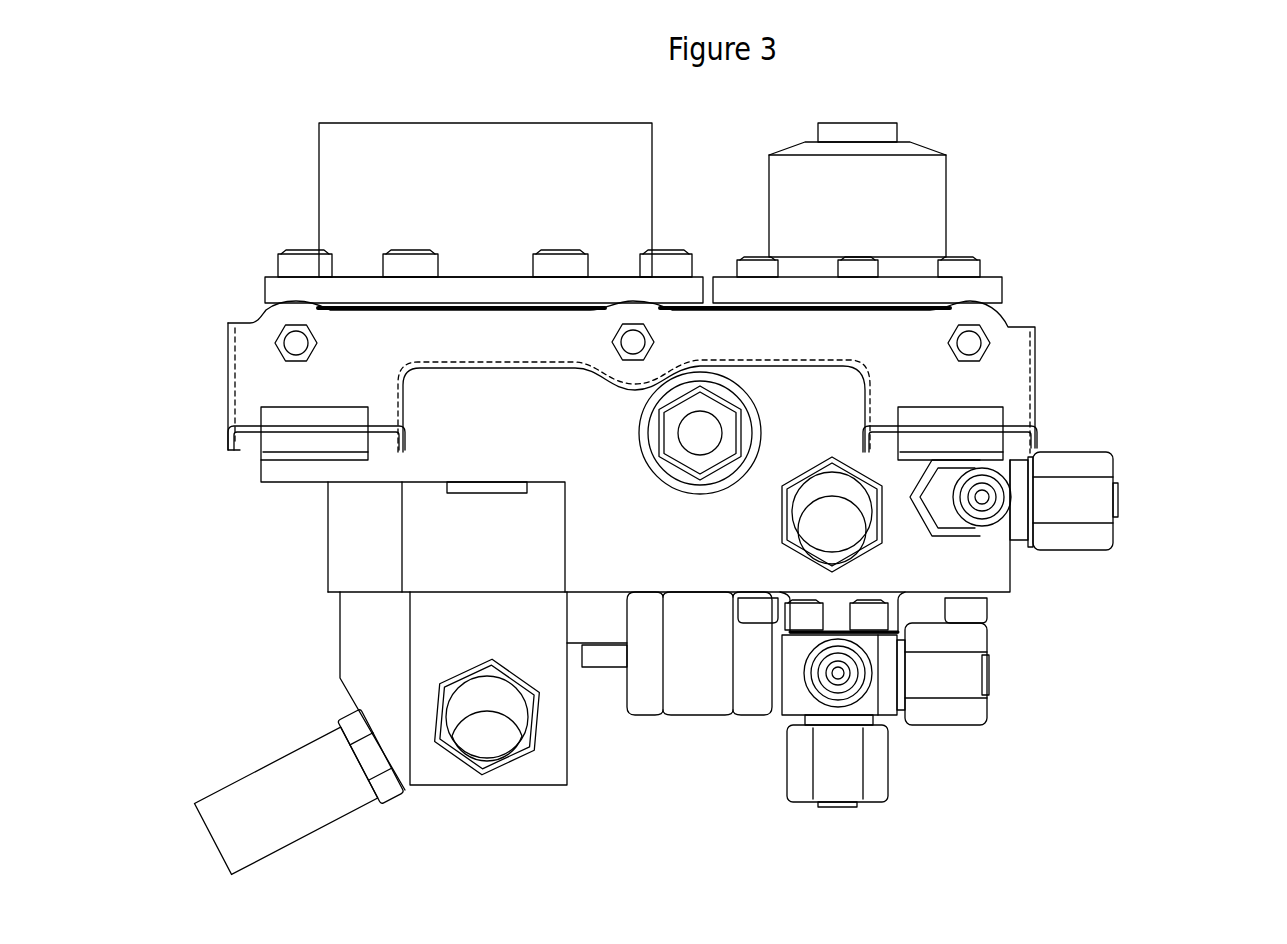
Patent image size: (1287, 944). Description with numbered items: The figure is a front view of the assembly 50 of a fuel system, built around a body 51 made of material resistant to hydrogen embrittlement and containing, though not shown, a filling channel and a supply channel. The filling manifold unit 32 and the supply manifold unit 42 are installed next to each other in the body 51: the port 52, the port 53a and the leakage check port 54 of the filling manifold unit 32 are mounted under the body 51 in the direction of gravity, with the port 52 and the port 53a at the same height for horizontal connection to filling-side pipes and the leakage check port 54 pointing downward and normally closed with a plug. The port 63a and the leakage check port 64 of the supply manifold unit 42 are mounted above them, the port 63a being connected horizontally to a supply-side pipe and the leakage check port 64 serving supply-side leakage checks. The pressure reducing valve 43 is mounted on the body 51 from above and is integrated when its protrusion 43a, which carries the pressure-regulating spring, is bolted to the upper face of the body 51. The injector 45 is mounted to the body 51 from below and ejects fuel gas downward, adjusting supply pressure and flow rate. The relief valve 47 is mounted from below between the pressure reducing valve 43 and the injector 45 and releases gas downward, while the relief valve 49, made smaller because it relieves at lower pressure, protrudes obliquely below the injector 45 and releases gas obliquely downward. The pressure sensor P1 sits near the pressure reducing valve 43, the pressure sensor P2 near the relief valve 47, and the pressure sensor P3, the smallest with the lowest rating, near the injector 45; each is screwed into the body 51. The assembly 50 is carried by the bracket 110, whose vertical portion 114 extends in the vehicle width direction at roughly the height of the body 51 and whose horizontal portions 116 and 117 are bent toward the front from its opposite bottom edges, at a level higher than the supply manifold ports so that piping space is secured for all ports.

The assembly 50 is at (690, 157).
The pressure reducing valve 43 is at (918, 190).
The protrusion 43a is at (948, 213).
The bracket 110 is at (249, 320).
The horizontal portion 117 is at (306, 428).
The horizontal portion 116 is at (985, 428).
The vertical portion 114 is at (542, 342).
The body 51 is at (995, 573).
The pressure sensor P2 is at (685, 455).
The pressure sensor P1 is at (782, 528).
The pressure sensor P3 is at (513, 766).
The supply manifold unit 42 is at (1081, 460).
The port 63a is at (985, 494).
The leakage check port 64 is at (1100, 458).
The injector 45 is at (558, 776).
The relief valve 49 is at (272, 773).
The relief valve 47 is at (700, 692).
The filling manifold unit 32 is at (911, 724).
The port 52 is at (978, 673).
The port 53a is at (860, 695).
The leakage check port 54 is at (878, 785).